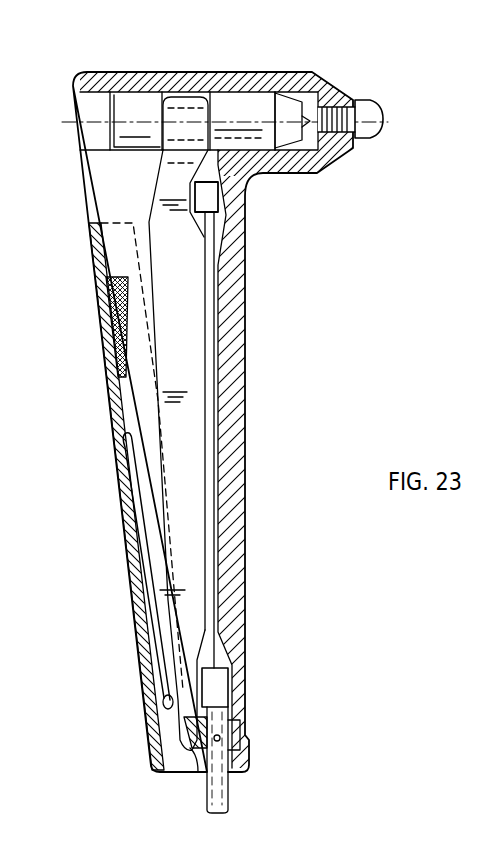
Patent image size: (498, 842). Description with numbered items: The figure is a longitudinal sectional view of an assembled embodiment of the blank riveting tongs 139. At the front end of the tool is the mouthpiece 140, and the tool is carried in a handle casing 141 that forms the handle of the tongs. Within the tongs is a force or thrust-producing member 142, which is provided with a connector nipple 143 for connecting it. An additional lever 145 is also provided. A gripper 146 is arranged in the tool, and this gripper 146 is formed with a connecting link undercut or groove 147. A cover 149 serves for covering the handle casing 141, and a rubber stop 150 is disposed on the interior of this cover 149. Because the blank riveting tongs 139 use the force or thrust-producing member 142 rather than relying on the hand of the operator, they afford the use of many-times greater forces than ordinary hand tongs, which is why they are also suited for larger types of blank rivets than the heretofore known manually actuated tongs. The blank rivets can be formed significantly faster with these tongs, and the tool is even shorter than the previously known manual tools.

The blank riveting tongs 139 is at (317, 383).
The mouthpiece 140 is at (372, 113).
The handle casing 141 is at (293, 82).
The force or thrust-producing member 142 is at (207, 327).
The connector nipple 143 is at (221, 806).
The additional lever 145 is at (160, 407).
The gripper 146 is at (245, 103).
The connecting link undercut or groove 147 is at (163, 147).
The cover 149 is at (110, 390).
The rubber stop 150 is at (102, 325).